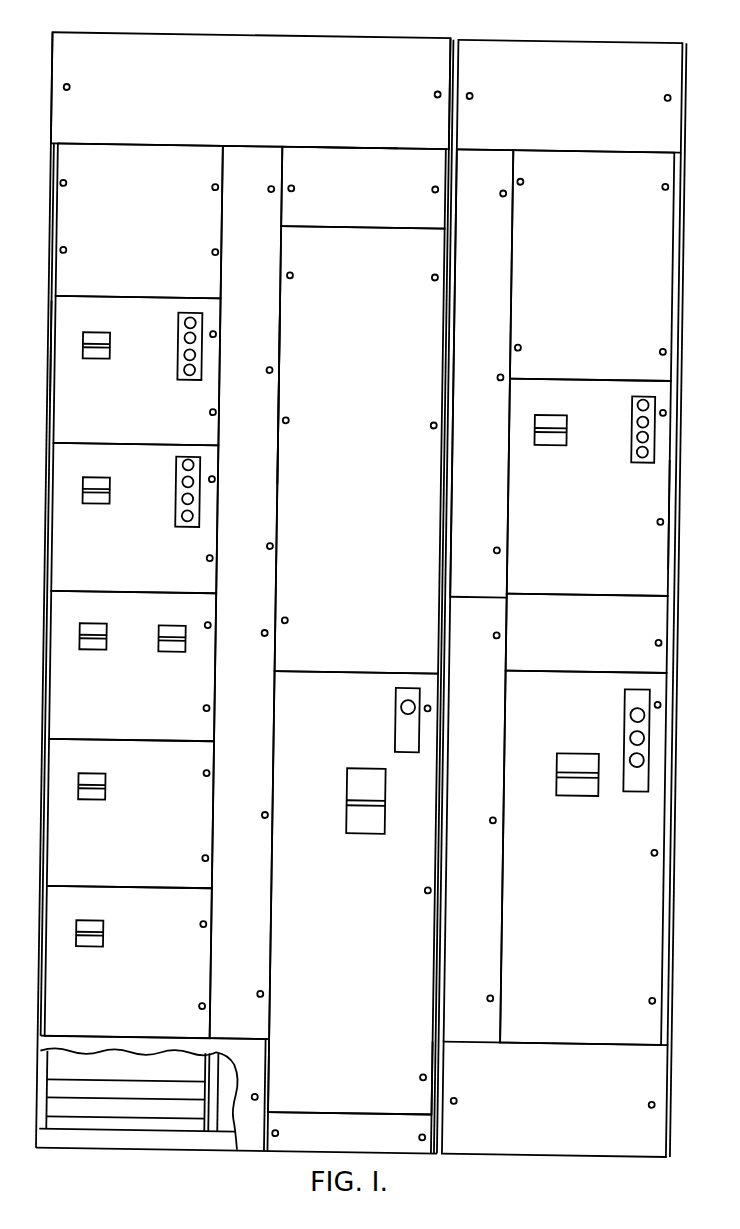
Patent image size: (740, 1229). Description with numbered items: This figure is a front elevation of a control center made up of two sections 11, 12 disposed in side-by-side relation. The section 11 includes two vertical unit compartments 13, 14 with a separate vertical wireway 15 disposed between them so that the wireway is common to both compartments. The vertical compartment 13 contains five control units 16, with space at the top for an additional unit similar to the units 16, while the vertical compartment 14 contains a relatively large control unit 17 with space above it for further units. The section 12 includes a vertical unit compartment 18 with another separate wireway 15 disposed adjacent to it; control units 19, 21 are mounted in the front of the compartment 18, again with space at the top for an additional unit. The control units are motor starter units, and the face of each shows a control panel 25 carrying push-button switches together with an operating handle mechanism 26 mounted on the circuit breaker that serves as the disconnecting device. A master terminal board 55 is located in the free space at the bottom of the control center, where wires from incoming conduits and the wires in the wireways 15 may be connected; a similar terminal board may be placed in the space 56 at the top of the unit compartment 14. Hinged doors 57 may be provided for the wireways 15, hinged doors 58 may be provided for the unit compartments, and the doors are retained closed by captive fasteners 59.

The section 11 is at (252, 23).
The section 12 is at (578, 26).
The vertical unit compartment 13 is at (131, 197).
The vertical unit compartment 14 is at (354, 199).
The vertical wireway 15 is at (238, 231).
The control unit 16 is at (127, 384).
The control unit 17 is at (345, 884).
The vertical unit compartment 18 is at (585, 199).
The control unit 19 is at (569, 844).
The control unit 21 is at (579, 471).
The control panel 25 is at (183, 334).
The operating handle mechanism 26 is at (91, 478).
The master terminal board 55 is at (136, 1083).
The space 56 is at (332, 151).
The hinged door 57 is at (273, 393).
The hinged door 58 is at (57, 343).
The captive fastener 59 is at (213, 555).